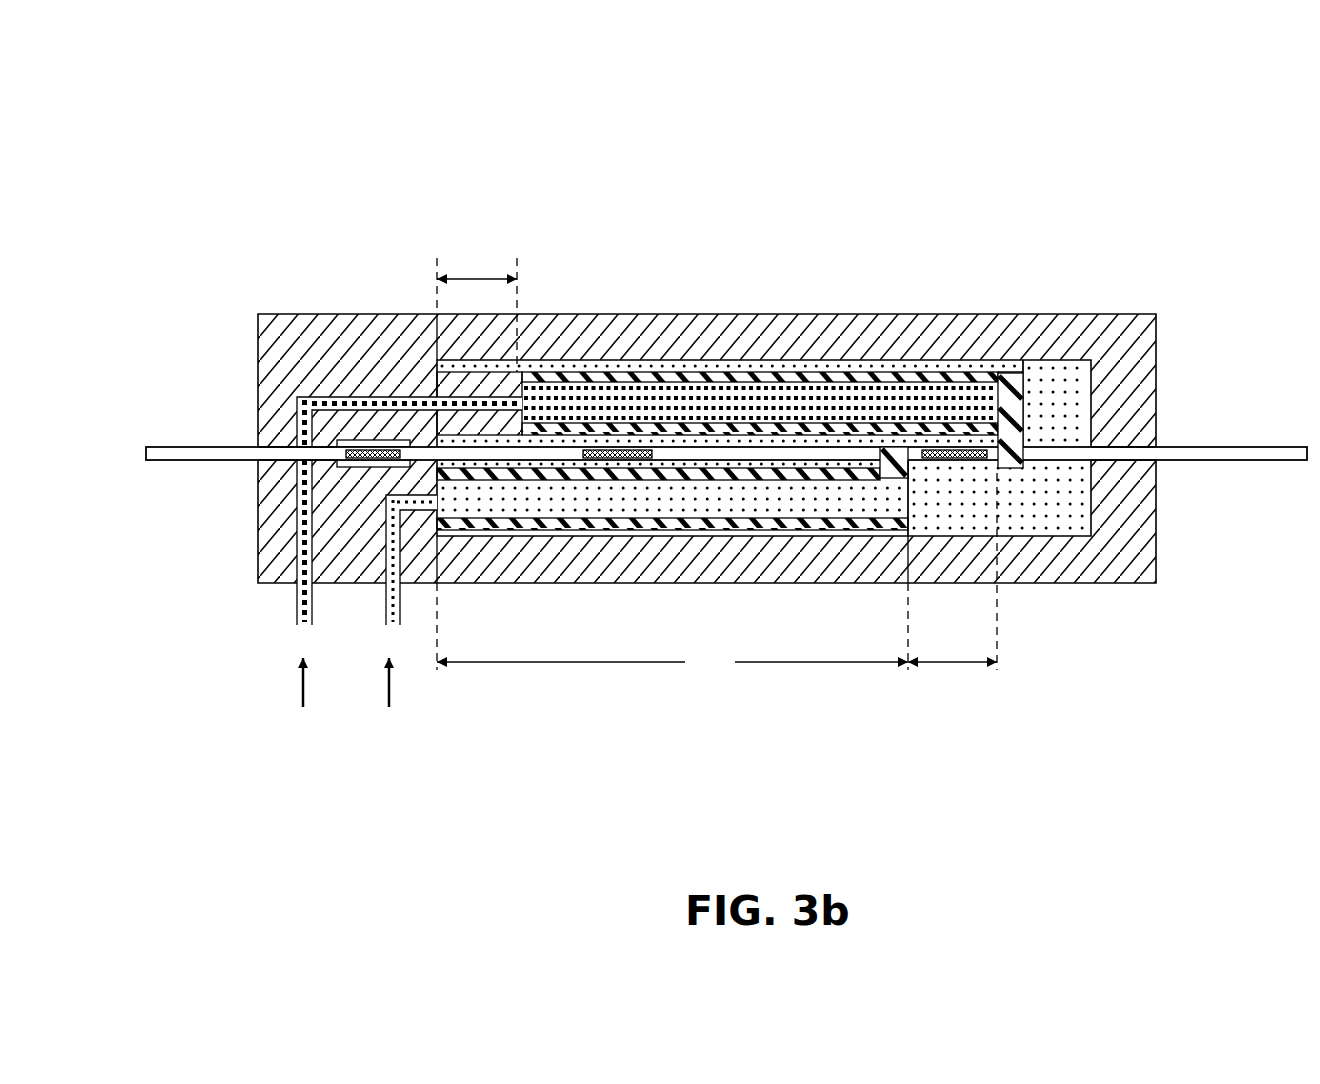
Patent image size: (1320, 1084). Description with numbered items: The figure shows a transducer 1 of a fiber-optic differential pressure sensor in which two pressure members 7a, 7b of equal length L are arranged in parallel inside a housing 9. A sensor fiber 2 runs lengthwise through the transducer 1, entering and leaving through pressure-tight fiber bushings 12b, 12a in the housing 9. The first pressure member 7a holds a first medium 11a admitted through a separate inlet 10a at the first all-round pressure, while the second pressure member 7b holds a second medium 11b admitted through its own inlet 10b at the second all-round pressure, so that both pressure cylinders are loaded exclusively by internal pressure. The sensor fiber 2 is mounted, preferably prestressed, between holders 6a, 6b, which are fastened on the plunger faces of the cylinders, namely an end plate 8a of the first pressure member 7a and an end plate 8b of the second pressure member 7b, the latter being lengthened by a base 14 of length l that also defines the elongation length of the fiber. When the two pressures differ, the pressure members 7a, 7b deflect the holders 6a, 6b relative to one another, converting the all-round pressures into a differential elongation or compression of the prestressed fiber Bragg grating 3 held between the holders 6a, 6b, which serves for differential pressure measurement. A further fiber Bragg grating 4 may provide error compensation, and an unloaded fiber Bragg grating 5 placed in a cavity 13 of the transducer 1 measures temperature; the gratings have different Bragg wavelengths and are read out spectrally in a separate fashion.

The transducer 1 is at (306, 150).
The sensor fiber 2 is at (223, 450).
The fiber Bragg grating 3 is at (940, 450).
The fiber Bragg grating 4 is at (618, 450).
The fiber Bragg grating 5 is at (378, 447).
The holder 6a is at (1008, 393).
The holder 6b is at (895, 450).
The first pressure member 7a is at (545, 467).
The second pressure member 7b is at (617, 367).
The end plate 8a is at (1027, 377).
The end plate 8b is at (903, 533).
The housing 9 is at (258, 573).
The inlet 10a is at (295, 607).
The inlet 10b is at (398, 608).
The first medium 11a is at (767, 400).
The second medium 11b is at (963, 505).
The fiber bushing 12a is at (1127, 445).
The fiber bushing 12b is at (282, 445).
The cavity 13 is at (348, 463).
The base 14 is at (493, 425).